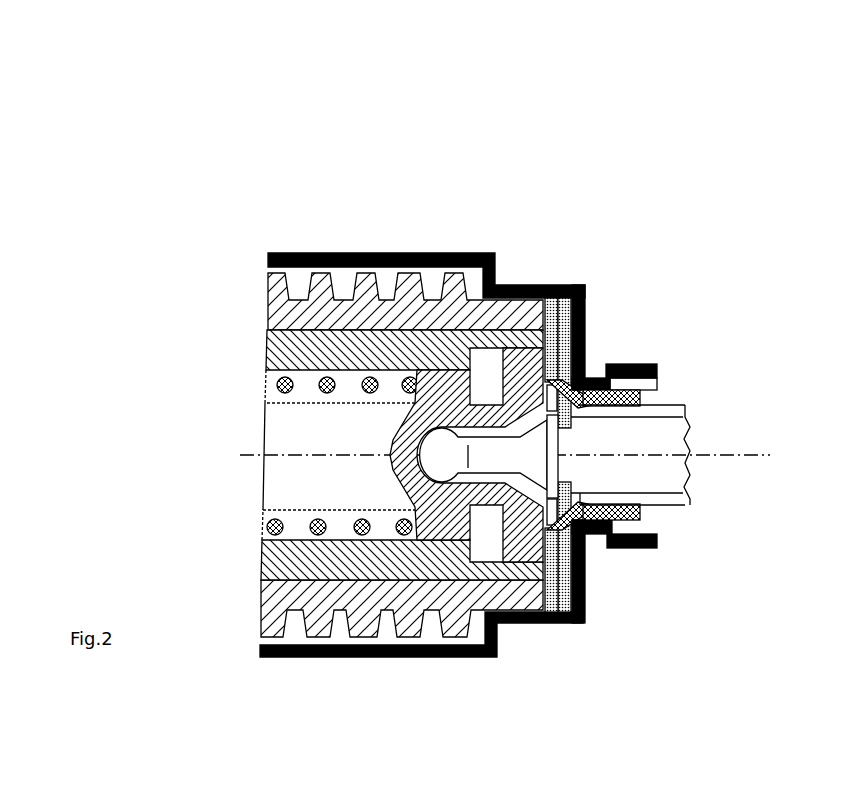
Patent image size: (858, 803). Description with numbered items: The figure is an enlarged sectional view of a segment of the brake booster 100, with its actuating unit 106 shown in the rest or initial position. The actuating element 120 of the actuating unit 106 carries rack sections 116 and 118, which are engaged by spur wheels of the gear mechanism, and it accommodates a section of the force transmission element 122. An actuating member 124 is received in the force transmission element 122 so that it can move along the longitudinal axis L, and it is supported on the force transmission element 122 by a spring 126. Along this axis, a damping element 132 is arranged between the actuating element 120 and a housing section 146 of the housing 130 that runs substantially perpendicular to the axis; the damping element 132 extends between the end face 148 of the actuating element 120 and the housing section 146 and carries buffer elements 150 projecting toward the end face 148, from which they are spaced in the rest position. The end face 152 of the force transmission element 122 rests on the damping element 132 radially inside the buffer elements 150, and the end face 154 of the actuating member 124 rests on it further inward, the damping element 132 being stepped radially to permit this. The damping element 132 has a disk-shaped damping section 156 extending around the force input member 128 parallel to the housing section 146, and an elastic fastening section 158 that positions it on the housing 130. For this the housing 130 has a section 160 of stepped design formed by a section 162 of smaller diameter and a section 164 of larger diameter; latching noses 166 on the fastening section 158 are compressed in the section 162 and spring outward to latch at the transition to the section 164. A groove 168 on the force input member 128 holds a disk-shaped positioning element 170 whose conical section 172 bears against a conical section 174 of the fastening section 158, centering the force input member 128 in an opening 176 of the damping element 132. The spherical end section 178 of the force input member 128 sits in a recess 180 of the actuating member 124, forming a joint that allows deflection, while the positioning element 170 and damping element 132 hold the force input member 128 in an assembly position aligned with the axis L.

The brake booster 100 is at (614, 98).
The actuating unit 106 is at (450, 148).
The rack section 116 is at (262, 598).
The rack section 118 is at (268, 283).
The actuating element 120 is at (514, 627).
The force transmission element 122 is at (268, 347).
The actuating member 124 is at (264, 418).
The spring 126 is at (262, 522).
The force input member 128 is at (690, 452).
The housing 130 is at (453, 252).
The damping element 132 is at (570, 627).
The housing section 146 is at (587, 305).
The end face 148 is at (545, 288).
The buffer elements 150 is at (558, 288).
The end face 152 is at (585, 617).
The end face 154 is at (596, 598).
The damping section 156 is at (585, 288).
The fastening section 158 is at (660, 405).
The section of stepped design 160 is at (690, 330).
The section of smaller diameter 162 is at (595, 376).
The section of larger diameter 164 is at (618, 388).
The latching noses 166 is at (660, 370).
The groove 168 is at (578, 470).
The positioning element 170 is at (652, 494).
The conical section 172 is at (634, 540).
The conical section 174 is at (612, 548).
The opening 176 is at (603, 583).
The spherical end section 178 is at (453, 473).
The recess 180 is at (422, 483).